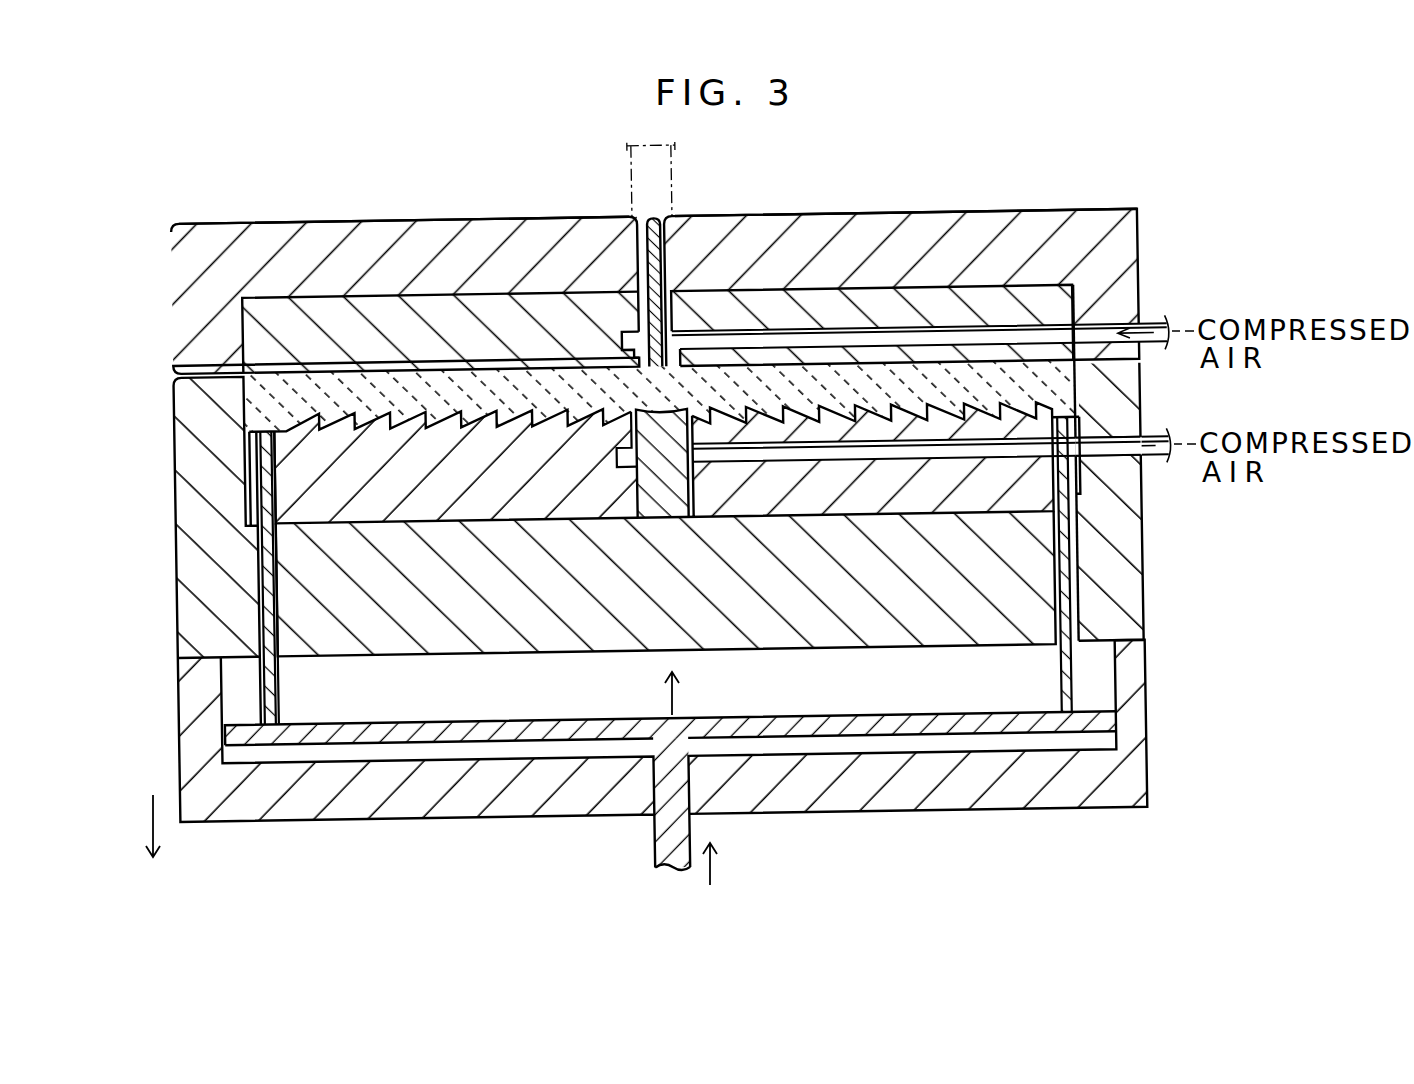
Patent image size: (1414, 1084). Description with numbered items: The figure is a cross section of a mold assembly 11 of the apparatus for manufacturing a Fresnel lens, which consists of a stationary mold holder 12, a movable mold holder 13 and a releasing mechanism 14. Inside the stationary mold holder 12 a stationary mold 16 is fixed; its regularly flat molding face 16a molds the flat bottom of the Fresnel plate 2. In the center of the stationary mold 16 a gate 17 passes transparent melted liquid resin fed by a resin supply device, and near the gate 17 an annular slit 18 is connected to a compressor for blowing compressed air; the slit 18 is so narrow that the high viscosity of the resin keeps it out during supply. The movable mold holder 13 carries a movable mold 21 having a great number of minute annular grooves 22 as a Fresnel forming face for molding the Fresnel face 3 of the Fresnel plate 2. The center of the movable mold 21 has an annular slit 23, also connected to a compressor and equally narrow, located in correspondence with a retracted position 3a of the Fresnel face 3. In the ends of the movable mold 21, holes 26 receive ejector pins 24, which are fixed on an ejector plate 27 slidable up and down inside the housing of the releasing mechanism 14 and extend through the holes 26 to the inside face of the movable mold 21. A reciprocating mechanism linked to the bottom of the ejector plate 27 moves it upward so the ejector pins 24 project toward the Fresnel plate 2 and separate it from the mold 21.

The Fresnel plate 2 is at (250, 411).
The Fresnel face 3 is at (290, 430).
The retracted position of the Fresnel face 3a is at (677, 518).
The mold assembly 11 is at (263, 222).
The stationary mold holder 12 is at (170, 333).
The movable mold holder 13 is at (175, 623).
The releasing mechanism 14 is at (178, 719).
The stationary mold 16 is at (1062, 306).
The molding face 16a is at (1028, 352).
The gate 17 is at (660, 212).
The annular slit 18 is at (632, 358).
The movable mold 21 is at (280, 495).
The annular grooves 22 is at (345, 425).
The annular slit 23 is at (620, 470).
The ejector pins 24 is at (1068, 543).
The holes 26 is at (1076, 421).
The ejector plate 27 is at (866, 714).